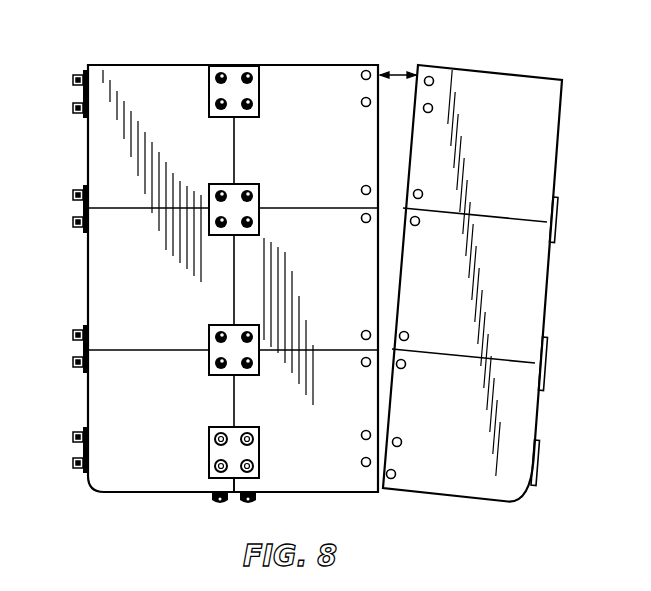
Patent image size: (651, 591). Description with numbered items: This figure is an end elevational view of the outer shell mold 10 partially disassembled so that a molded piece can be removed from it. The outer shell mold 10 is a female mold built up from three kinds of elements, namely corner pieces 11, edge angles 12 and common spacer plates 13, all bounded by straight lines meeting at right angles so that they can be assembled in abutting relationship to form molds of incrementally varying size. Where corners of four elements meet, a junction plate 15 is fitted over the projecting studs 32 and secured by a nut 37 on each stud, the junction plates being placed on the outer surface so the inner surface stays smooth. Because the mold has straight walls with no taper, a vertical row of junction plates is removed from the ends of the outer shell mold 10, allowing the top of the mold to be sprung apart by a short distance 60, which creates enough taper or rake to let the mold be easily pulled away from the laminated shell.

The outer shell mold 10 is at (86, 287).
The corner piece 11 is at (108, 470).
The edge angle 12 is at (533, 283).
The common spacer plate 13 is at (315, 150).
The junction plate 15 is at (208, 448).
The projecting stud 32 is at (394, 473).
The nut 37 is at (258, 454).
The short distance 60 is at (398, 75).